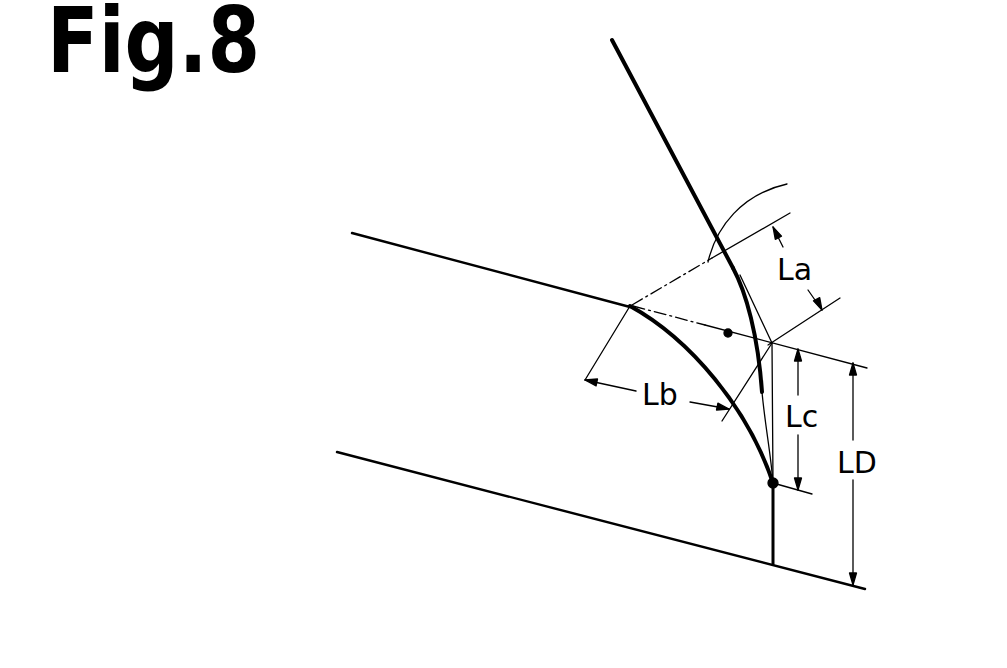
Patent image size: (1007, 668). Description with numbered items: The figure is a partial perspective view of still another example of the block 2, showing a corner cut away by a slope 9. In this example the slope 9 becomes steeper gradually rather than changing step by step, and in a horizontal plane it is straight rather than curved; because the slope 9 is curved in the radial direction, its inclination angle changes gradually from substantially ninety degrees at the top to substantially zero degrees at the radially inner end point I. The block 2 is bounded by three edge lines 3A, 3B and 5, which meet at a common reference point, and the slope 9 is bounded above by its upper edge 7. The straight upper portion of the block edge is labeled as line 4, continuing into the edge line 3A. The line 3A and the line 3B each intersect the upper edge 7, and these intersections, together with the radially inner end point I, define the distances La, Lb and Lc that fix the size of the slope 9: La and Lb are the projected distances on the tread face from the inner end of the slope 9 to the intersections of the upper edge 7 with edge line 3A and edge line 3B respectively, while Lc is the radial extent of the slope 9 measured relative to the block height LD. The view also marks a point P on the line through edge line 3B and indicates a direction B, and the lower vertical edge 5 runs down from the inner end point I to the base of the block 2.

The block 2 is at (707, 117).
The edge line 3A is at (681, 166).
The edge line 3B is at (478, 268).
The straight edge line 4 is at (592, 147).
The edge line 5 is at (775, 548).
The upper edge of the slope 7 is at (787, 184).
The slope 9 is at (766, 394).
The direction B is at (707, 298).
The point P is at (730, 331).
The radially inner end point I is at (834, 518).